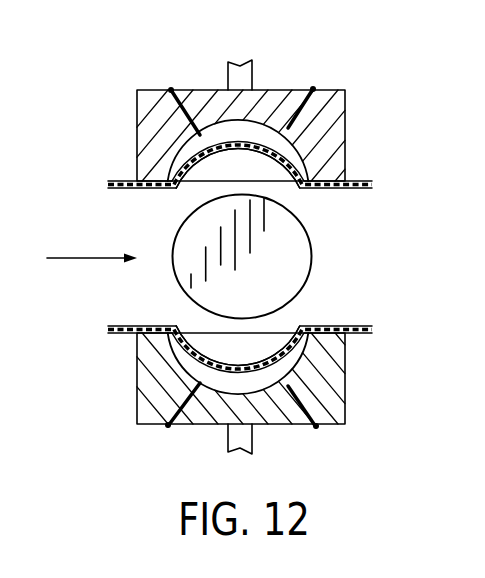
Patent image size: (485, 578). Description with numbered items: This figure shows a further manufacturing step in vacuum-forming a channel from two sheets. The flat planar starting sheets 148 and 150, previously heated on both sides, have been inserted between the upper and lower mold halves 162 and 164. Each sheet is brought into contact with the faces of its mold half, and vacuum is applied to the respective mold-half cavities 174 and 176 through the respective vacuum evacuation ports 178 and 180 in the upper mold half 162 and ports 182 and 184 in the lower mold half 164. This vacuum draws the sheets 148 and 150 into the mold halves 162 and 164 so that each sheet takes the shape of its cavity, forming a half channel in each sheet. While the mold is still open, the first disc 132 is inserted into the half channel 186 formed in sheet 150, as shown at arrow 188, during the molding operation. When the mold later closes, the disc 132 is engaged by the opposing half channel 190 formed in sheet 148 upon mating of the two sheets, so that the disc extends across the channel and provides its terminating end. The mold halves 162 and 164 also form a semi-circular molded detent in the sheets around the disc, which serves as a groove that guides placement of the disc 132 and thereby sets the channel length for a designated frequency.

The first disc 132 is at (190, 236).
The starting sheet 148 is at (120, 181).
The starting sheet 150 is at (121, 334).
The mold half 162 is at (345, 110).
The mold half 164 is at (346, 392).
The mold-half cavity 174 is at (250, 129).
The mold-half cavity 176 is at (232, 383).
The vacuum evacuation port 178 is at (171, 90).
The vacuum evacuation port 180 is at (313, 89).
The vacuum evacuation port 182 is at (168, 426).
The vacuum evacuation port 184 is at (316, 427).
The half channel 186 is at (244, 366).
The arrow 188 is at (62, 256).
The opposing half channel 190 is at (284, 163).